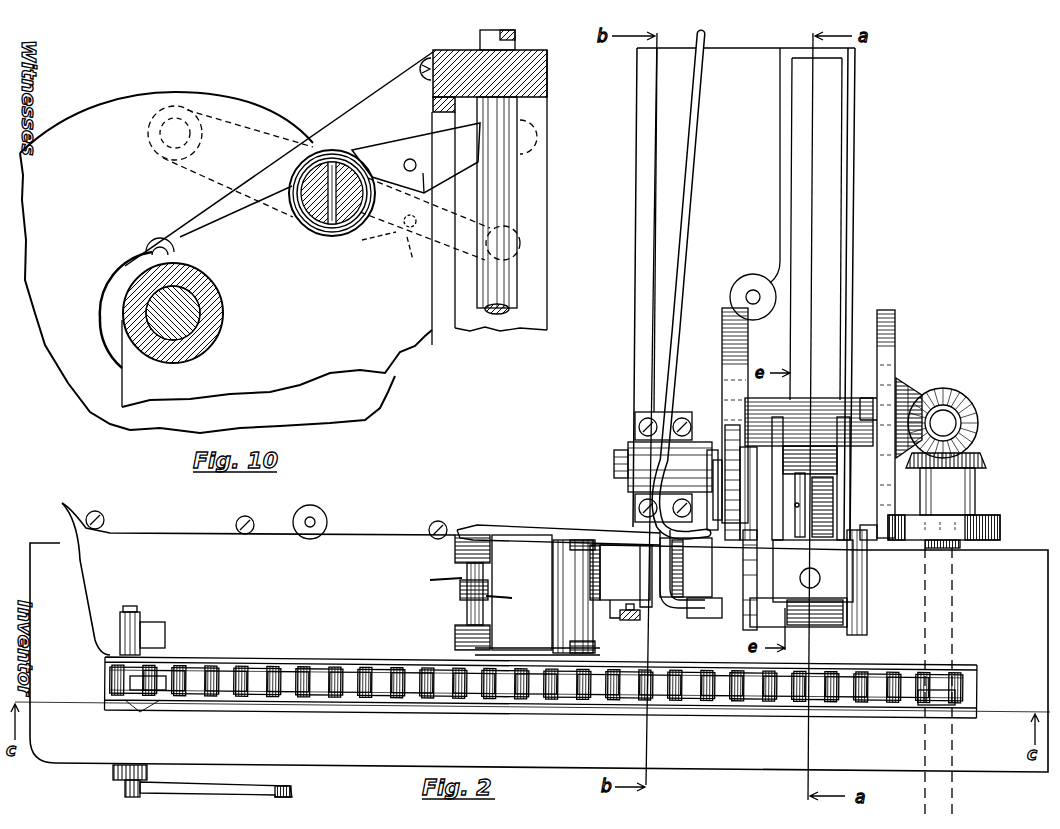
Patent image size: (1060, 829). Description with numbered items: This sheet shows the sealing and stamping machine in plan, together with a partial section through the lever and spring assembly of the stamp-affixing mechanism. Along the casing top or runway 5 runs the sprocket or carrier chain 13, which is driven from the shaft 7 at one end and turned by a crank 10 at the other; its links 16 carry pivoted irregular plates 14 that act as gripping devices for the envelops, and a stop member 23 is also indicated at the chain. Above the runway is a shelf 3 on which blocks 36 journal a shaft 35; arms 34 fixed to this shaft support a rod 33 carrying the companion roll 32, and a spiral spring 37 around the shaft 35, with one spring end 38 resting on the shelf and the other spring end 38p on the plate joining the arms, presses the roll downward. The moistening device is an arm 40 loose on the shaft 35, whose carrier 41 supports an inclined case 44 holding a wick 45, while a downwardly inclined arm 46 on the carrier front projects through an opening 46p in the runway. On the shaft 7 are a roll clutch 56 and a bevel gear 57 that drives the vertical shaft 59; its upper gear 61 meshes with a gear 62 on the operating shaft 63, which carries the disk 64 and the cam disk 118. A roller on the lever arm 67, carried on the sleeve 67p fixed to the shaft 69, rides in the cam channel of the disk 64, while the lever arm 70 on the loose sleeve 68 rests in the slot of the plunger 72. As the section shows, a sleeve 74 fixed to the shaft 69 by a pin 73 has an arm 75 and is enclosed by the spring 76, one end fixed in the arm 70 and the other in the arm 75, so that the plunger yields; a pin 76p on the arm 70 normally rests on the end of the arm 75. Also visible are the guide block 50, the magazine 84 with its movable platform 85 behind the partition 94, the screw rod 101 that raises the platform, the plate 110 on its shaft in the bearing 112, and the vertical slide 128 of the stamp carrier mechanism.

In FIG. 2, the shelf 3 is at (372, 545).
In FIG. 2, the casing top or runway 5 is at (539, 657).
In FIG. 2, the shaft 7 is at (940, 549).
In FIG. 2, the crank 10 is at (212, 788).
In FIG. 2, the sprocket or carrier chain 13 is at (979, 683).
In FIG. 2, the irregular plates 14 is at (148, 692).
In FIG. 2, the links 16 is at (303, 670).
In FIG. 2, the stop pin 23 is at (142, 626).
In FIG. 2, the companion roll 32 is at (562, 571).
In FIG. 2, the rod 33 is at (580, 653).
In FIG. 2, the arms 34 is at (505, 532).
In FIG. 2, the shaft 35 is at (466, 616).
In FIG. 2, the blocks 36 is at (454, 552).
In FIG. 2, the spiral spring 37 is at (488, 587).
In FIG. 2, the spring end 38 is at (438, 589).
In FIG. 2, the spring end 38p is at (510, 606).
In FIG. 2, the arm 40 is at (553, 530).
In FIG. 2, the carrier 41 is at (608, 612).
In FIG. 2, the inclined case 44 is at (625, 572).
In FIG. 2, the wick 45 is at (599, 556).
In FIG. 2, the downwardly inclined arm 46 is at (673, 618).
In FIG. 2, the opening 46p is at (713, 619).
In FIG. 10, the guide block 50 is at (548, 74).
In FIG. 2, the roll clutch 56 is at (1001, 527).
In FIG. 2, the bevel gear 57 is at (980, 460).
In FIG. 2, the shaft 59 is at (950, 425).
In FIG. 2, the gear 61 is at (978, 412).
In FIG. 2, the gear 62 is at (907, 394).
In FIG. 10, the operating shaft 63 is at (198, 312).
In FIG. 10, the disk 64 is at (200, 104).
In FIG. 2, the disk 64 is at (896, 315).
In FIG. 10, the lever arm 67 is at (204, 165).
In FIG. 2, the lever arm 67 is at (875, 400).
In FIG. 2, the sleeve 67p is at (860, 540).
In FIG. 2, the sleeve 68 is at (822, 480).
In FIG. 10, the shaft 69 is at (300, 228).
In FIG. 2, the shaft 69 is at (897, 498).
In FIG. 10, the lever arm 70 is at (462, 268).
In FIG. 2, the lever arm 70 is at (808, 579).
In FIG. 10, the plunger 72 is at (519, 184).
In FIG. 10, the pin 73 is at (326, 233).
In FIG. 10, the sleeve 74 is at (292, 206).
In FIG. 2, the sleeve 74 is at (797, 472).
In FIG. 10, the arm 75 is at (404, 222).
In FIG. 10, the spring 76 is at (341, 161).
In FIG. 10, the pin 76p is at (418, 162).
In FIG. 2, the pin 76p is at (809, 568).
In FIG. 2, the magazine 84 is at (835, 83).
In FIG. 2, the floor or platform 85 is at (830, 135).
In FIG. 2, the partition 94 is at (780, 128).
In FIG. 2, the screw rod 101 is at (750, 292).
In FIG. 2, the plate 110 is at (712, 446).
In FIG. 2, the bearing 112 is at (635, 420).
In FIG. 2, the cam disk 118 is at (722, 336).
In FIG. 2, the vertical slide 128 is at (750, 574).